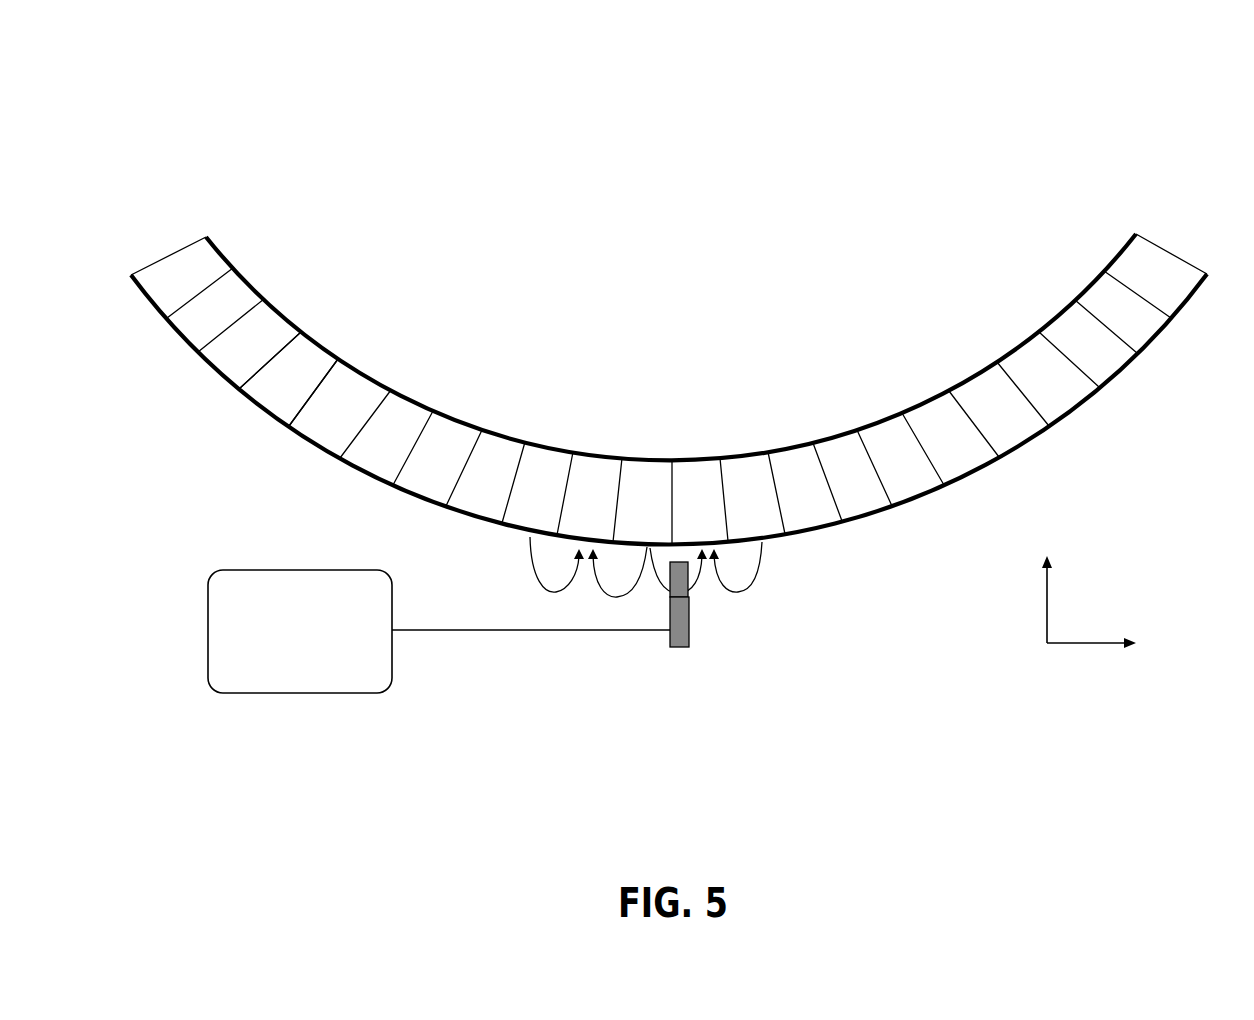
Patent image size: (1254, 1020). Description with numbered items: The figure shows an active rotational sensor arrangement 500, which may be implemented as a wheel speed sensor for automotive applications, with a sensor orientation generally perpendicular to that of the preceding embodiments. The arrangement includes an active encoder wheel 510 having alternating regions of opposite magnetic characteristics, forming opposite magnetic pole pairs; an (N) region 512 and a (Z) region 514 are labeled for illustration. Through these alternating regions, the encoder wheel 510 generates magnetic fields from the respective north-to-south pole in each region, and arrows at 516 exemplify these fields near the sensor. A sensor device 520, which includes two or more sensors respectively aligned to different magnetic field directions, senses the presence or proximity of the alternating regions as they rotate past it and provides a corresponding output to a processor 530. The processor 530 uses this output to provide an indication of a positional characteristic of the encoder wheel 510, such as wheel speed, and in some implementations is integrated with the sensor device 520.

The active rotational sensor arrangement 500 is at (1104, 67).
The active encoder wheel 510 is at (207, 236).
The (N) region 512 is at (275, 312).
The (Z) region 514 is at (317, 347).
The magnetic fields 516 is at (760, 562).
The sensor device 520 is at (689, 613).
The processor 530 is at (362, 570).